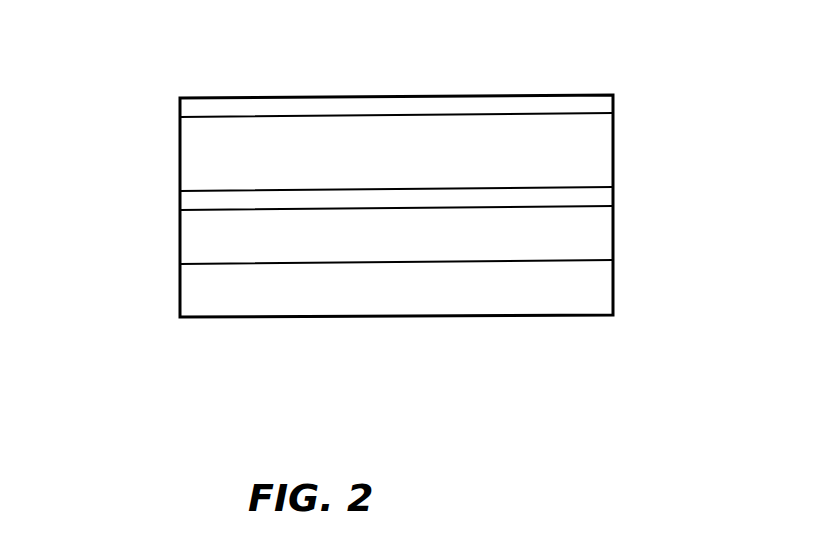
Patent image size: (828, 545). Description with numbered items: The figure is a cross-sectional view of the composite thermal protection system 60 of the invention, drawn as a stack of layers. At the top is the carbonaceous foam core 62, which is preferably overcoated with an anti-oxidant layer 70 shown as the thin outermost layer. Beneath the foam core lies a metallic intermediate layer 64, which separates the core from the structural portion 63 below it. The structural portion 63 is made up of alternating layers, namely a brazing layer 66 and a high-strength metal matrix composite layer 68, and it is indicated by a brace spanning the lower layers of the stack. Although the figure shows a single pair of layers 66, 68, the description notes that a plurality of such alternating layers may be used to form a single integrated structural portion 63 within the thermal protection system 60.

The thermal protection system 60 is at (528, 404).
The anti-oxidant layer 70 is at (193, 105).
The carbonaceous foam core 62 is at (205, 153).
The metallic intermediate layer 64 is at (198, 200).
The brazing layer 66 is at (198, 242).
The high-strength metal matrix composite layer 68 is at (200, 295).
The structural portion 63 is at (620, 206).